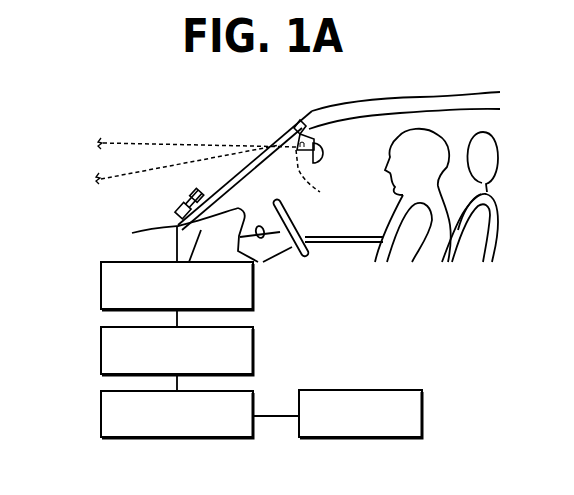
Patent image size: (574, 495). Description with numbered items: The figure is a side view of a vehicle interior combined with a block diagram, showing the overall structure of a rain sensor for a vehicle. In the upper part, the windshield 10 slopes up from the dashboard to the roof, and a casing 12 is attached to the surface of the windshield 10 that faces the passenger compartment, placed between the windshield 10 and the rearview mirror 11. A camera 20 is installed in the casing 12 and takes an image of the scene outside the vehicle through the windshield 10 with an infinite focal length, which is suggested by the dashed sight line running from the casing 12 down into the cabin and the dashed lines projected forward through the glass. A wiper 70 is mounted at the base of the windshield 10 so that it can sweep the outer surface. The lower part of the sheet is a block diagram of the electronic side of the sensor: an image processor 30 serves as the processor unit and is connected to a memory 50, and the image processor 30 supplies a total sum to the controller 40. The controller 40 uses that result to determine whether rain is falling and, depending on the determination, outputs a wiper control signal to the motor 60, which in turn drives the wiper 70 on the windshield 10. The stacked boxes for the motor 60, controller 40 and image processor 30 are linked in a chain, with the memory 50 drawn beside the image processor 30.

The windshield 10 is at (241, 180).
The rearview mirror 11 is at (324, 151).
The casing 12 is at (297, 129).
The camera 20 is at (314, 186).
The image processor 30 is at (101, 416).
The controller 40 is at (101, 352).
The memory 50 is at (422, 416).
The motor 60 is at (101, 285).
The wiper 70 is at (196, 193).